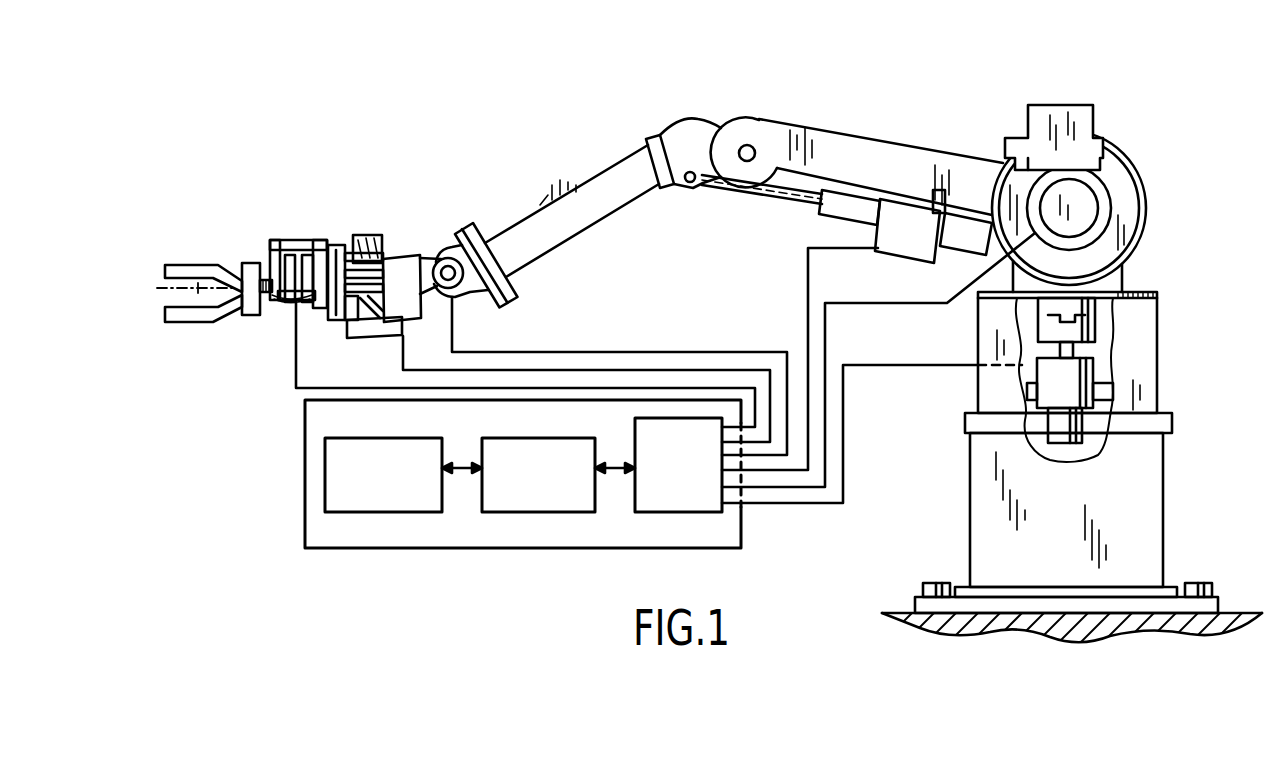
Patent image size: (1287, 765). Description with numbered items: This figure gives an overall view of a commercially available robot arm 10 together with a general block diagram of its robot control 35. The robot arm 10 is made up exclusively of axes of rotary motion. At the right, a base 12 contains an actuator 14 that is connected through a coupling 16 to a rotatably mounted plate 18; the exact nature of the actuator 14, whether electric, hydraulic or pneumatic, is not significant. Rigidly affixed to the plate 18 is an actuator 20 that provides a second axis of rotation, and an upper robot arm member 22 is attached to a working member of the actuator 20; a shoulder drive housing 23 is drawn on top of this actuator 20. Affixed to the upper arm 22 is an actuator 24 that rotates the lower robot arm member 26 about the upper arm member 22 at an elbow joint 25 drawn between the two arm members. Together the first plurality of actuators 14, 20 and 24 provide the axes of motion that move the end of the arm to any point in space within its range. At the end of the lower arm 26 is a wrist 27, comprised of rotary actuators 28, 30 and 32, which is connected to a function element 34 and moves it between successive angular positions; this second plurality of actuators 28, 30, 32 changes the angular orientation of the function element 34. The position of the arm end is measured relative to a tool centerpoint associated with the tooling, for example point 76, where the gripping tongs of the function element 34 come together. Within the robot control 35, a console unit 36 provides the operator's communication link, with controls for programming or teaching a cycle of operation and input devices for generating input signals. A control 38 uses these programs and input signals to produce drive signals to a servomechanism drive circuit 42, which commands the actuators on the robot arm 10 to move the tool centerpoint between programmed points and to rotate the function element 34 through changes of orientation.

The robot arm 10 is at (828, 112).
The base 12 is at (1163, 477).
The actuator 14 is at (1100, 367).
The coupling 16 is at (1100, 328).
The rotatably mounted plate 18 is at (1133, 297).
The actuator 20 is at (1113, 205).
The upper robot arm member 22 is at (860, 132).
The shoulder drive 23 is at (1108, 135).
The actuator 24 is at (915, 265).
The elbow joint 25 is at (733, 122).
The lower robot arm member 26 is at (590, 228).
The wrist 27 is at (292, 229).
The rotary actuator 28 is at (463, 300).
The rotary actuator 30 is at (366, 262).
The rotary actuator 32 is at (276, 300).
The function element 34 is at (193, 327).
The robot control 35 is at (583, 437).
The console unit 36 is at (418, 515).
The control 38 is at (567, 512).
The servomechanism drive circuit 42 is at (703, 512).
The tool centerpoint 76 is at (198, 288).